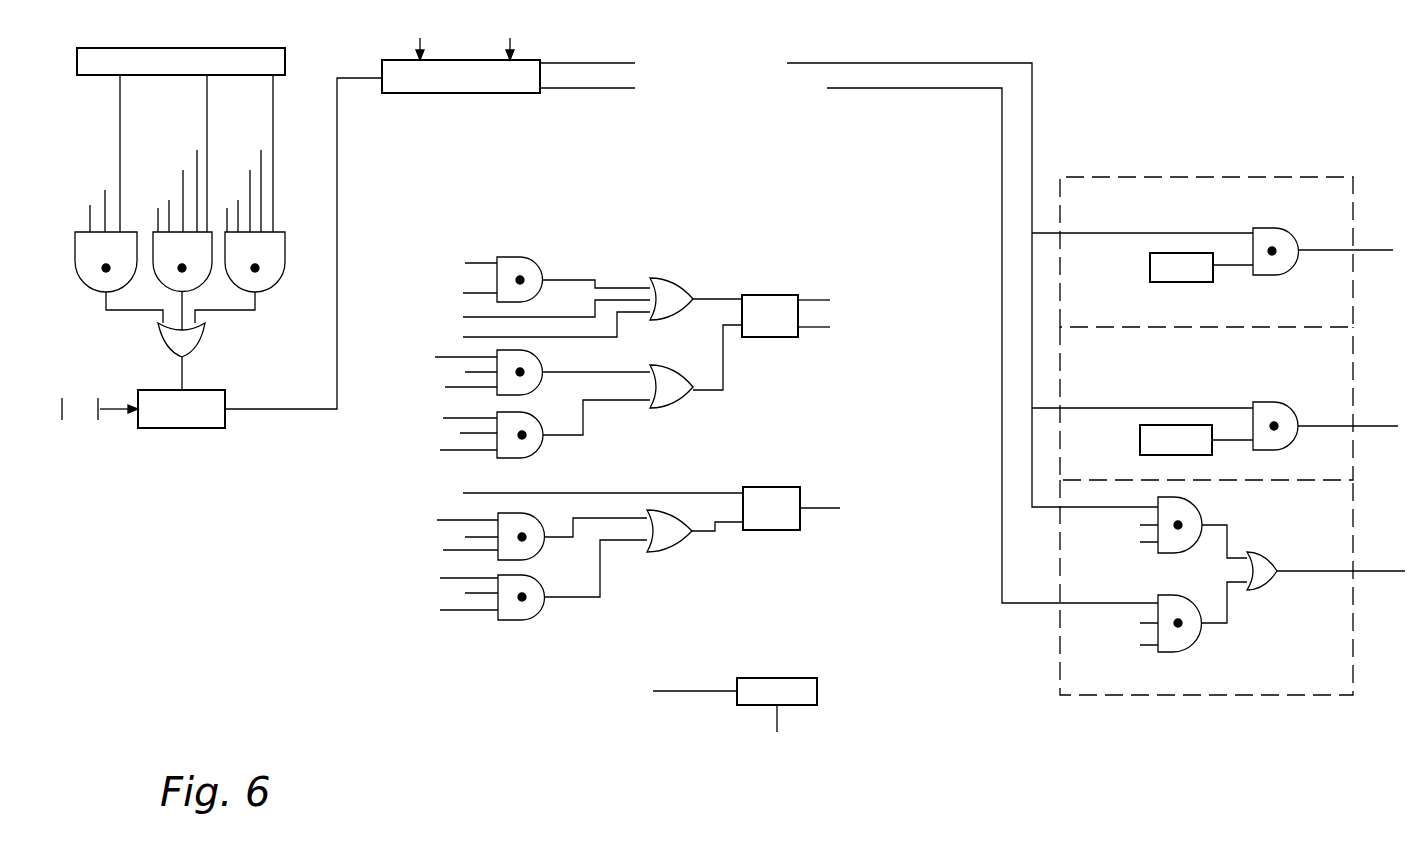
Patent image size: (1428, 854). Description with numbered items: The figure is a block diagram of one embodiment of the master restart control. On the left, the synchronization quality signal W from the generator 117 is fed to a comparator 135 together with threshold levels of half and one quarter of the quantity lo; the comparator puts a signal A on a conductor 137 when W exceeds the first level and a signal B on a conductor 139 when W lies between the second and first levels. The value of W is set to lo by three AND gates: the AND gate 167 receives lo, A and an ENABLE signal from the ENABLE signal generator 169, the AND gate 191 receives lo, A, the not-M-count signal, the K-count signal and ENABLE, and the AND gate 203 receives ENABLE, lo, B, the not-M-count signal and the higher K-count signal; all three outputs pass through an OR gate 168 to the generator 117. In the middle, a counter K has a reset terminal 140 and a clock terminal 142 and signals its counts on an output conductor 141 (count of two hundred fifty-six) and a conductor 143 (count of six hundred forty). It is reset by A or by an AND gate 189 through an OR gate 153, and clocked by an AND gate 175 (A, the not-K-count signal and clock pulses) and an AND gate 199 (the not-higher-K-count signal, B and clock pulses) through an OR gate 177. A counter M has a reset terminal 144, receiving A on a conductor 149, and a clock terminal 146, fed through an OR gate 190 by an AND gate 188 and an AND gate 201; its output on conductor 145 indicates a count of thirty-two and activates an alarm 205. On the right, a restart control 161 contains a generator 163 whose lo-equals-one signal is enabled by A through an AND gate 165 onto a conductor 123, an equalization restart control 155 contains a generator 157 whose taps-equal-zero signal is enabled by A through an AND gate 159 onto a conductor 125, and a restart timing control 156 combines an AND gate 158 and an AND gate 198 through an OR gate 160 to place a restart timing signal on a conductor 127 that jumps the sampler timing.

The ENABLE signal generator 169 is at (288, 62).
The AND gate 167 is at (88, 296).
The AND gate 191 is at (160, 292).
The AND gate 203 is at (258, 293).
The OR gate 168 is at (196, 345).
The generator 117 is at (190, 428).
The comparator 135 is at (532, 62).
The conductor 137 is at (600, 63).
The conductor 139 is at (582, 93).
The AND gate 189 is at (545, 264).
The OR gate 153 is at (680, 282).
The reset terminal 140 is at (745, 300).
The output conductor 141 is at (815, 299).
The clock terminal 142 is at (745, 325).
The conductor 143 is at (815, 330).
The AND gate 175 is at (543, 355).
The OR gate 177 is at (680, 369).
The AND gate 199 is at (540, 448).
The conductor 149 is at (648, 493).
The reset terminal 144 is at (745, 493).
The conductor 145 is at (815, 508).
The clock terminal 146 is at (748, 522).
The OR gate 190 is at (675, 515).
The AND gate 188 is at (540, 556).
The AND gate 201 is at (525, 618).
The alarm 205 is at (790, 678).
The restart control 161 is at (1228, 177).
The AND gate 165 is at (1275, 228).
The generator 163 is at (1150, 265).
The conductor 123 is at (1368, 250).
The equalization restart control 155 is at (1355, 380).
The AND gate 159 is at (1290, 412).
The generator 157 is at (1140, 440).
The conductor 125 is at (1368, 425).
The restart timing control 156 is at (1240, 695).
The AND gate 158 is at (1190, 501).
The AND gate 198 is at (1200, 597).
The OR gate 160 is at (1262, 556).
The conductor 127 is at (1362, 571).